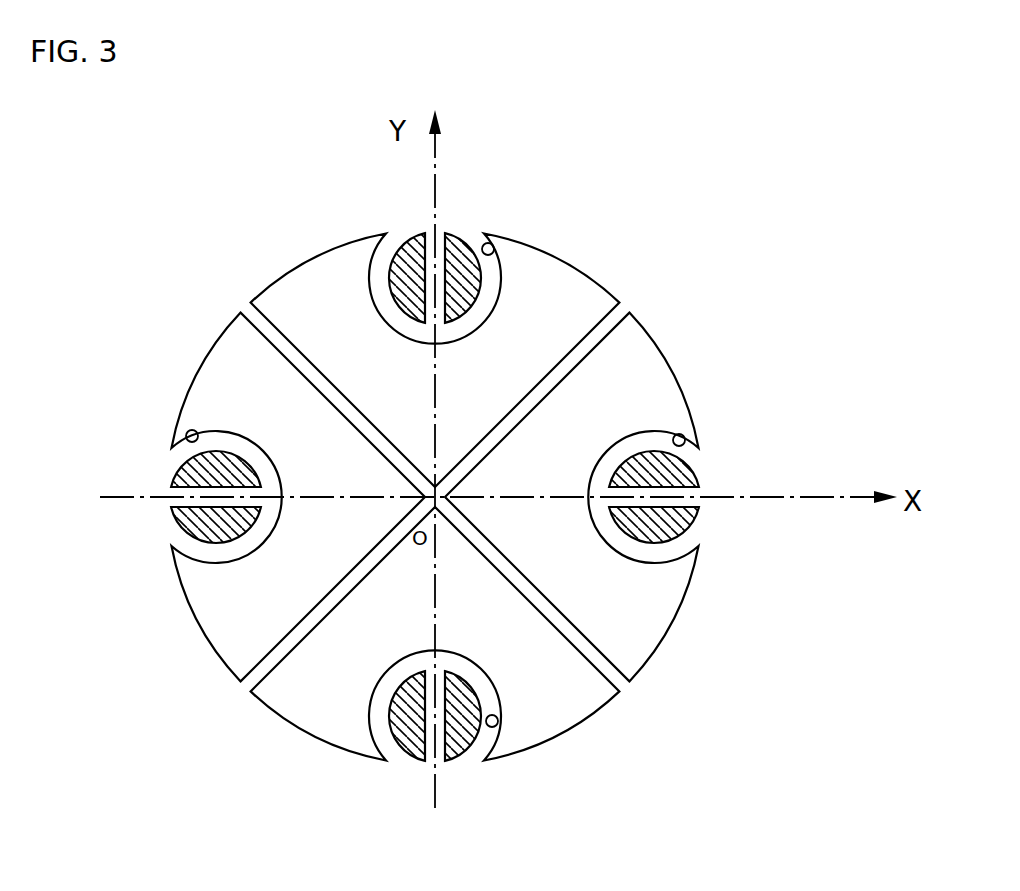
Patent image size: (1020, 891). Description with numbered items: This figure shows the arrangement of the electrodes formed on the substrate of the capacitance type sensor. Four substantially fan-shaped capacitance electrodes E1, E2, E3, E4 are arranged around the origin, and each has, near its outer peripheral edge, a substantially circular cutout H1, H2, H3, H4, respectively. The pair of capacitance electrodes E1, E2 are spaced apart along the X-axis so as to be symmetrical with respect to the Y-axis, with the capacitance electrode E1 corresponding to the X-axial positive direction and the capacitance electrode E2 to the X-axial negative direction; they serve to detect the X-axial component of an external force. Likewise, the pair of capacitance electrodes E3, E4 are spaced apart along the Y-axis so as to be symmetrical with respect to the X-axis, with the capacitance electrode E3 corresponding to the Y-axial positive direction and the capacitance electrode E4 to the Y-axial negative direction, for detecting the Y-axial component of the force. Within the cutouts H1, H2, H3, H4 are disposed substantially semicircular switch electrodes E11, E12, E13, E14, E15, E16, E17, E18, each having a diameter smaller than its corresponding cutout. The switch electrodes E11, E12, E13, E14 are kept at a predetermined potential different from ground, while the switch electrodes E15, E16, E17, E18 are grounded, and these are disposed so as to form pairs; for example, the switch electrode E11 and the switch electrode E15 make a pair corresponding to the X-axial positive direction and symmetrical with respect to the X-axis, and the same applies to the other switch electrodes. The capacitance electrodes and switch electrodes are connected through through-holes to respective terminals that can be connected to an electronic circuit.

The capacitance electrode E1 is at (607, 598).
The capacitance electrode E2 is at (225, 605).
The capacitance electrode E3 is at (300, 300).
The capacitance electrode E4 is at (315, 693).
The switch electrode E11 is at (695, 477).
The switch electrode E12 is at (205, 460).
The switch electrode E13 is at (462, 255).
The switch electrode E14 is at (452, 747).
The switch electrode E15 is at (690, 528).
The switch electrode E16 is at (205, 525).
The switch electrode E17 is at (395, 256).
The switch electrode E18 is at (407, 753).
The cutout H1 is at (696, 437).
The cutout H2 is at (185, 432).
The cutout H3 is at (494, 249).
The cutout H4 is at (496, 735).